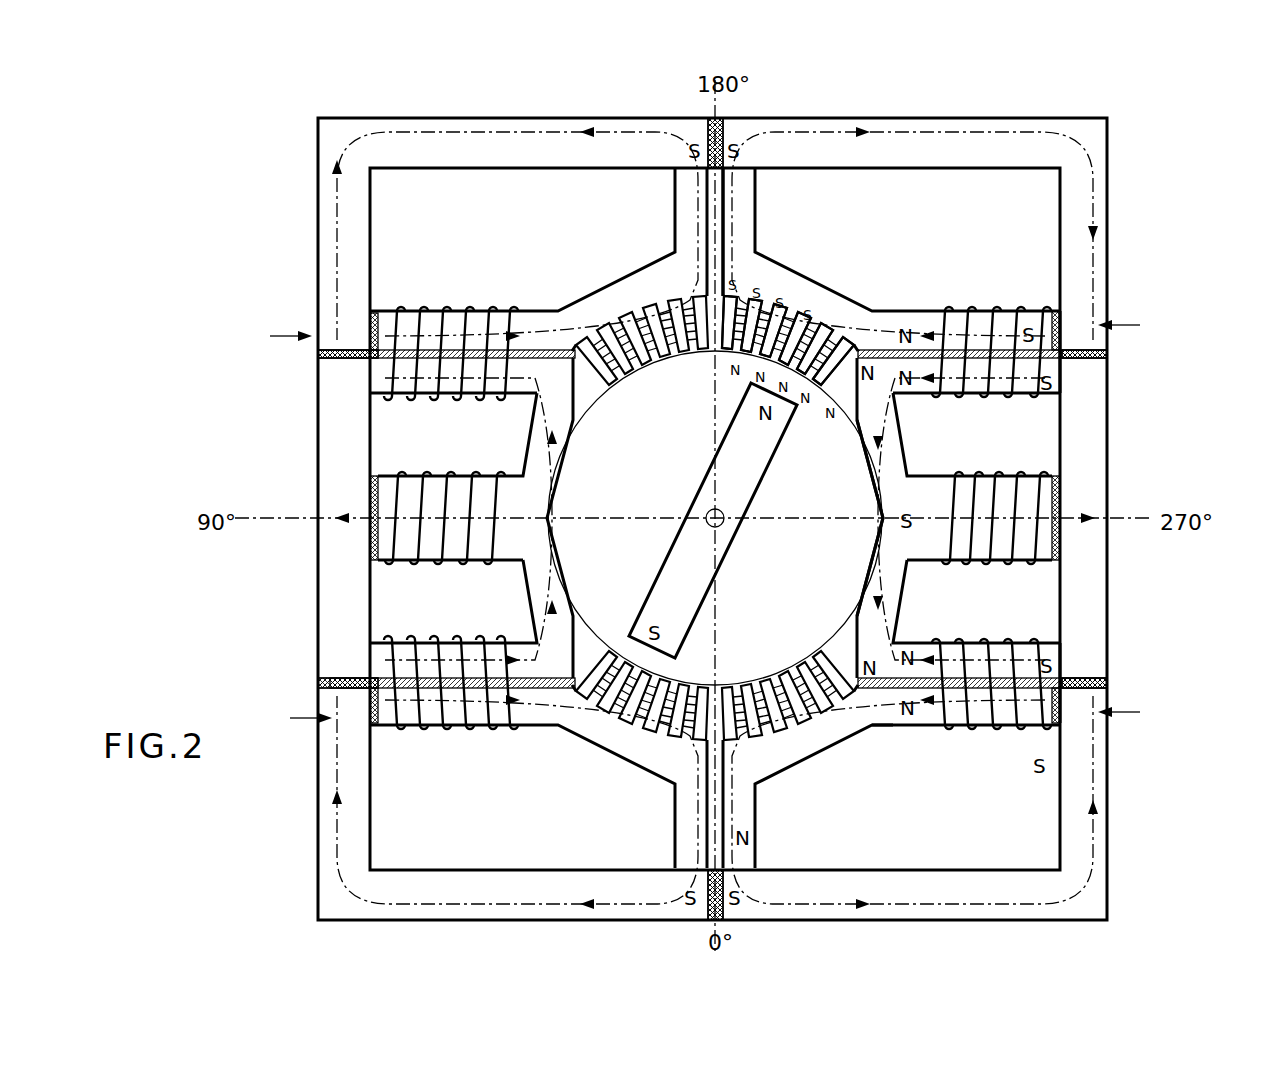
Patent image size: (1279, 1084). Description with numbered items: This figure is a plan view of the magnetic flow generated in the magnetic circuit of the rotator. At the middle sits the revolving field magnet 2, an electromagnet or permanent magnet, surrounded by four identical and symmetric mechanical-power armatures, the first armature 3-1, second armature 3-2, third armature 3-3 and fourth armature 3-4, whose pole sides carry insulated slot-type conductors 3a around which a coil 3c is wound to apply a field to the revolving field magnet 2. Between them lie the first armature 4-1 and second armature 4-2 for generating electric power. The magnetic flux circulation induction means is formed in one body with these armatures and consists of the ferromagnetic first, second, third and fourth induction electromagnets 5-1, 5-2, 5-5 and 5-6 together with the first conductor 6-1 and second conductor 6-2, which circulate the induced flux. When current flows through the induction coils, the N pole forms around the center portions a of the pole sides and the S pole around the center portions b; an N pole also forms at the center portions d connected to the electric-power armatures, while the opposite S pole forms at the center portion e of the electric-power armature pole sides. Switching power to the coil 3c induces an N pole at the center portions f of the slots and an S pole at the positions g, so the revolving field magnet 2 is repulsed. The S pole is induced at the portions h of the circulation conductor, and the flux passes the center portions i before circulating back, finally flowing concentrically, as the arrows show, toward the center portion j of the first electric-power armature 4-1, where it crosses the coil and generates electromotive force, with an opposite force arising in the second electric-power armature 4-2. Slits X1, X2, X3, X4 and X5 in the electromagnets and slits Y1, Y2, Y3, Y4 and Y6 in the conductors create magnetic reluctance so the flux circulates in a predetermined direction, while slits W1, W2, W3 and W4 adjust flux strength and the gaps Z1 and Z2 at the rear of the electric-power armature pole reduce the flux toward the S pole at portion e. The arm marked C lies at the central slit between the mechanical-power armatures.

The revolving field magnet 2 is at (755, 455).
The first armature 3-1 is at (842, 320).
The second armature 3-2 is at (823, 732).
The third armature 3-3 is at (612, 745).
The fourth armature 3-4 is at (605, 305).
The conductor of slot type 3a is at (810, 400).
The coil 3c is at (835, 335).
The first armature for generating electric power 4-1 is at (1062, 540).
The second armature for generating electric power 4-2 is at (372, 490).
The first induction electromagnet 5-1 is at (1065, 360).
The second induction electromagnet 5-2 is at (1062, 698).
The third induction electromagnet 5-5 is at (375, 688).
The fourth induction electromagnet 5-6 is at (372, 358).
The first circulation conductor 6-1 is at (1107, 830).
The second circulation conductor 6-2 is at (337, 748).
The slit W1 is at (958, 318).
The slit W2 is at (948, 722).
The slit W3 is at (477, 722).
The slit W4 is at (472, 320).
The center portion of magnetic pole side j is at (990, 490).
The slit X1 is at (1062, 293).
The slit X2 is at (1062, 760).
The slit X3 is at (372, 712).
The slit X4 is at (372, 325).
The magnetic junction X5 is at (335, 690).
The slit Y1 is at (692, 125).
The slit Y2 is at (700, 925).
The slit Y3 is at (1068, 352).
The slit Y4 is at (1097, 676).
The slit Y6 is at (318, 370).
The gap Z1 is at (1060, 512).
The gap Z2 is at (370, 540).
The center portion of magnetic pole side a is at (898, 722).
The center portion of magnetic pole side b is at (1040, 738).
The center portion of magnetic pole side d is at (875, 722).
The center portion of magnetic pole side e is at (870, 525).
The center portion of slots f is at (692, 425).
The position of induced S pole g is at (812, 320).
The portion of magnetic pole side h is at (727, 132).
The center portion i is at (1085, 830).
The pole arm C is at (748, 232).